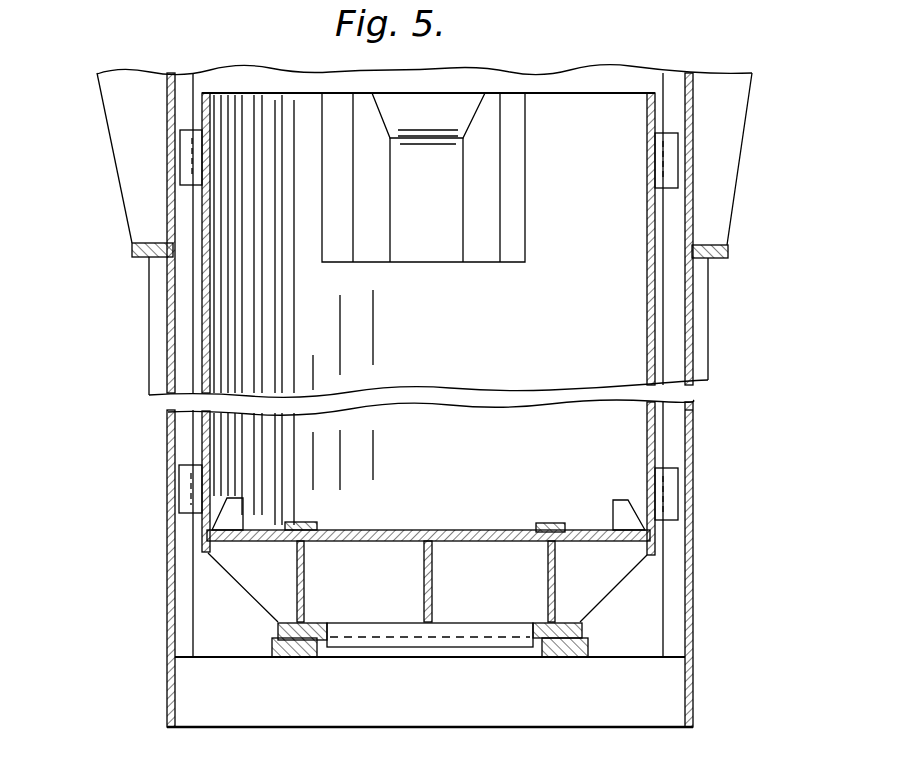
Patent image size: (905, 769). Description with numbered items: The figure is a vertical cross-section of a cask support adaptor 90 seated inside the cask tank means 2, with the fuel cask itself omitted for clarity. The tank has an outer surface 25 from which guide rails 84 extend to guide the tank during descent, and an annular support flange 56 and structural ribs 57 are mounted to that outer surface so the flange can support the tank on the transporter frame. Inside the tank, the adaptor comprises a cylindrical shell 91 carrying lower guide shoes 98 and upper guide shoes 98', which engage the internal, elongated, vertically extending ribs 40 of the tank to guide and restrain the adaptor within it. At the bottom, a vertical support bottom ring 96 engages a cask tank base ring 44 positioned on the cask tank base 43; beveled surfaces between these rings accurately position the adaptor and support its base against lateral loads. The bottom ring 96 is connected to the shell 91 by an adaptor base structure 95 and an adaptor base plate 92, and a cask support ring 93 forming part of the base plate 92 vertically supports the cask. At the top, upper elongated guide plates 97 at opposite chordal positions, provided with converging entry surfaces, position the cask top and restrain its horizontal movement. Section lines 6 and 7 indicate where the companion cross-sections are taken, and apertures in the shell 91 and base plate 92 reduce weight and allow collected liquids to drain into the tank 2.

The cask tank means 2 is at (778, 396).
The section line 6- 6 is at (147, 158).
The section line 7- 7 is at (443, 454).
The outer surface of the tank 25 is at (693, 428).
The internal vertical extending ribs 40 is at (670, 613).
The cask tank base 43 is at (575, 715).
The cask tank base ring 44 is at (588, 647).
The annular support flange 56 is at (130, 248).
The structural ribs 57 is at (97, 97).
The guide rails 84 is at (157, 322).
The cask support adaptor 90 is at (796, 317).
The cylindrical shell 91 is at (202, 350).
The adaptor base plate 92 is at (465, 530).
The cask support ring 93 is at (302, 523).
The adaptor base structure 95 is at (612, 565).
The adaptor bottom ring 96 is at (583, 625).
The upper guide plates 97 is at (487, 262).
The lower guide shoes 98 is at (425, 513).
The upper guide shoes 98' is at (446, 149).